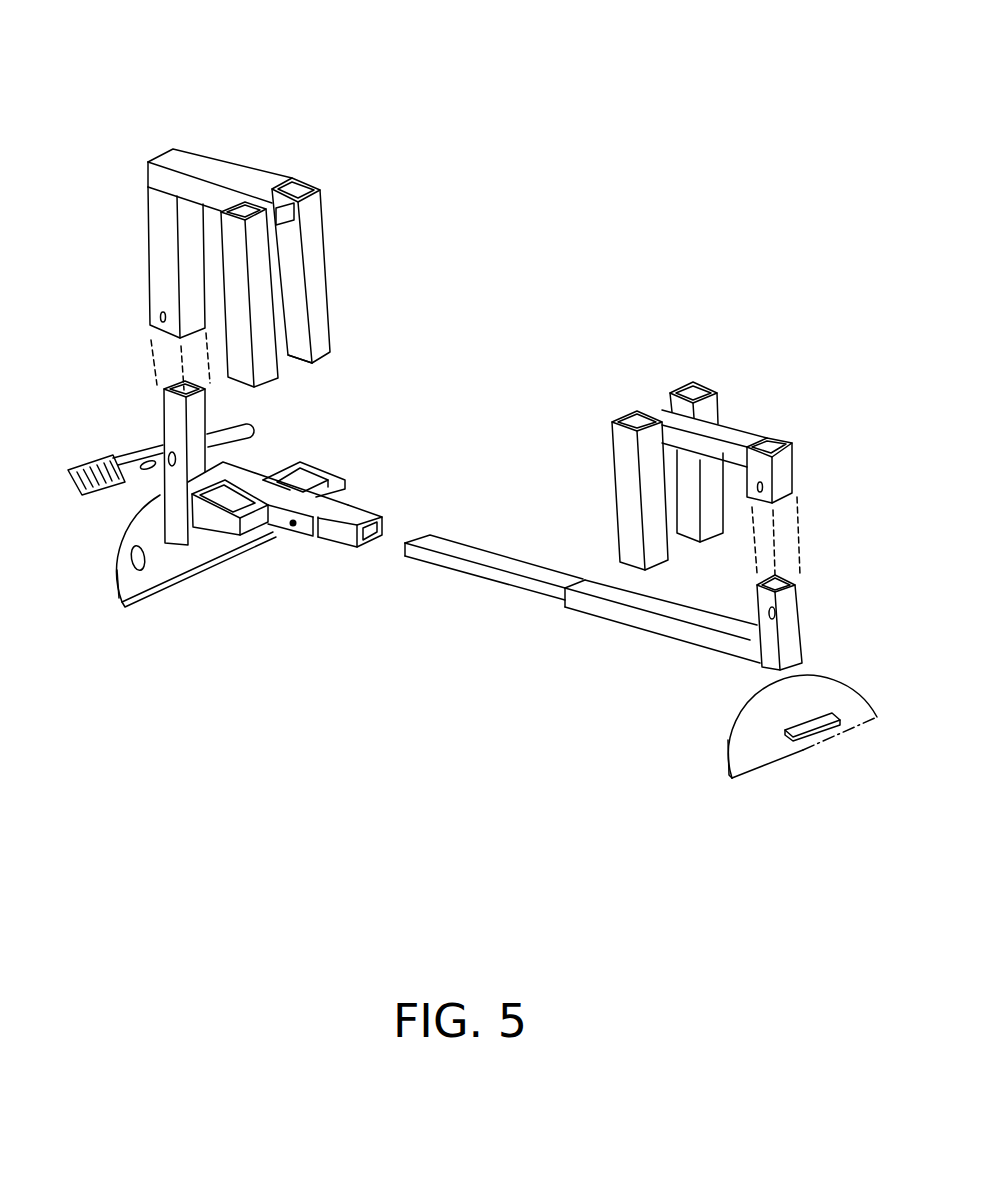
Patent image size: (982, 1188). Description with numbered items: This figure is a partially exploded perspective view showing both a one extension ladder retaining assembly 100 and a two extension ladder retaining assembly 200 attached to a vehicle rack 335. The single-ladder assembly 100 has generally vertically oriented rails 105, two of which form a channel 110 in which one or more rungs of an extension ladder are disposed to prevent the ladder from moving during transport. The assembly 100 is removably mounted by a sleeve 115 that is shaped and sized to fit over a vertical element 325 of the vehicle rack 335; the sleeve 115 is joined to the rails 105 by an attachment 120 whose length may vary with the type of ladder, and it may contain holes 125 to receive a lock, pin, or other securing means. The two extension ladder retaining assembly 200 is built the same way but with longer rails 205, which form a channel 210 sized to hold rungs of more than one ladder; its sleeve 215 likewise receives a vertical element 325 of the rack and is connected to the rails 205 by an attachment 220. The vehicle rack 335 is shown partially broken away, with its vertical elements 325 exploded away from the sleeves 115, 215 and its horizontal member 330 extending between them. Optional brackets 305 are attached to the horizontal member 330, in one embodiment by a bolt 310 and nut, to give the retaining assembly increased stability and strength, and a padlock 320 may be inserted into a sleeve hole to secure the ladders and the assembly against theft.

The extension ladder retaining assembly 100 is at (692, 352).
The rail 105 is at (630, 467).
The channel 110 is at (675, 543).
The sleeve 115 is at (783, 482).
The attachment 120 is at (723, 422).
The holes 125 is at (762, 483).
The two extension ladder retaining assembly 200 is at (226, 137).
The rail 205 is at (253, 260).
The channel 210 is at (287, 365).
The sleeve 215 is at (162, 245).
The attachment 220 is at (227, 169).
The optional brackets 305 is at (299, 533).
The bolt 310 is at (293, 527).
The padlock 320 is at (87, 463).
The vertical element 325 is at (178, 410).
The horizontal member 330 is at (343, 530).
The vehicle rack 335 is at (162, 562).